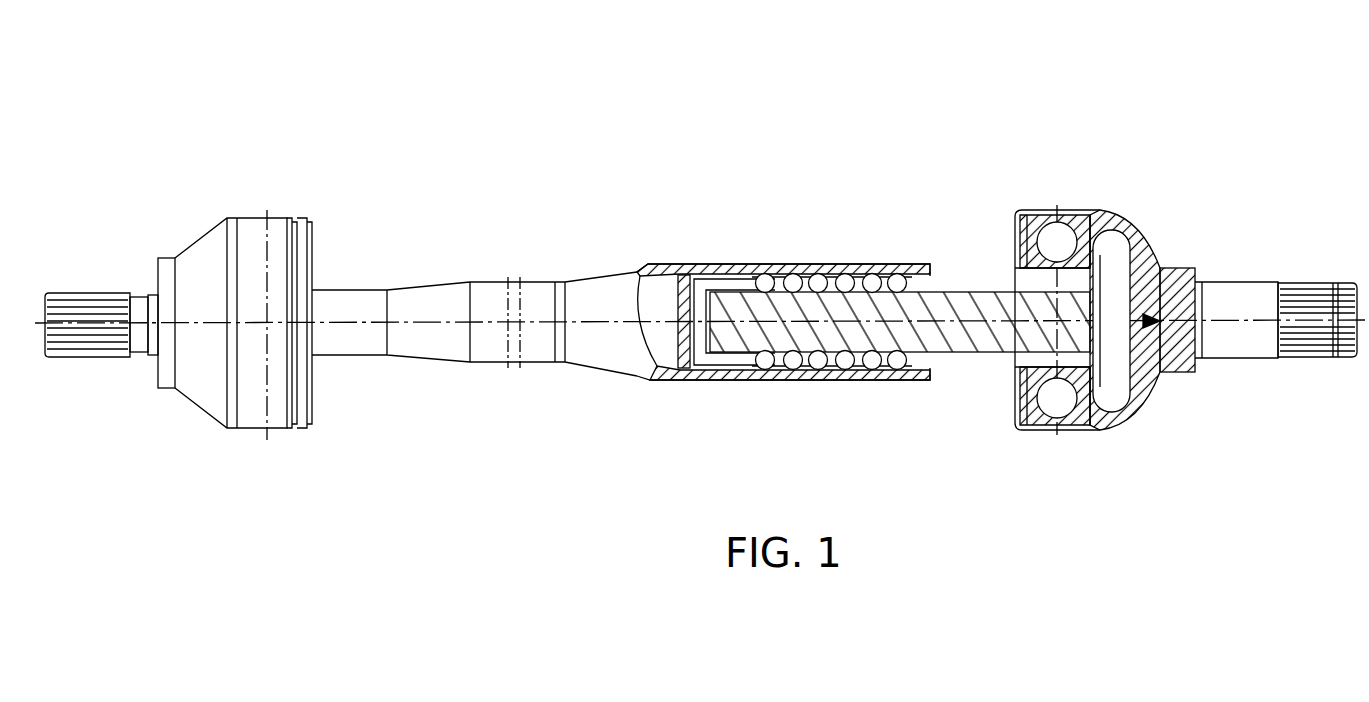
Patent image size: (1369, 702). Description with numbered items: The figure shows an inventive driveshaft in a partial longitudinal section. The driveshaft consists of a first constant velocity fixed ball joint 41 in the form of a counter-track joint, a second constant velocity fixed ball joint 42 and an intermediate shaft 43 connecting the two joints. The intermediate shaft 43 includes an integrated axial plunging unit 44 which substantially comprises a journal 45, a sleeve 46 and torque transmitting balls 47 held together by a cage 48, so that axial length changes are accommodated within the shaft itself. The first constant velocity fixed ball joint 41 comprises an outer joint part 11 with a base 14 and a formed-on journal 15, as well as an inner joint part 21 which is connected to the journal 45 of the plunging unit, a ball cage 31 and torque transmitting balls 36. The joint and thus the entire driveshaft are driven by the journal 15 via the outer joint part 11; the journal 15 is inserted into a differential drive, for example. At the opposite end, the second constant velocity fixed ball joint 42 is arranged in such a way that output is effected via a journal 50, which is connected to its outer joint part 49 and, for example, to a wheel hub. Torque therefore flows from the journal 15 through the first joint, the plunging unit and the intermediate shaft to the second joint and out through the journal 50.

The outer joint part 11 is at (1148, 281).
The base 14 is at (1150, 252).
The journal 15 is at (1240, 296).
The inner joint part 21 is at (1105, 222).
The ball cage 31 is at (1028, 243).
The torque transmitting balls 36 is at (1050, 245).
The first constant velocity fixed ball joint 41 is at (1107, 259).
The second constant velocity fixed ball joint 42 is at (235, 249).
The intermediate shaft 43 is at (538, 240).
The axial plunging unit 44 is at (863, 248).
The journal 45 is at (862, 305).
The sleeve 46 is at (773, 273).
The torque transmitting balls 47 is at (793, 280).
The cage 48 is at (830, 275).
The outer joint part 49 is at (200, 262).
The journal 50 is at (87, 310).